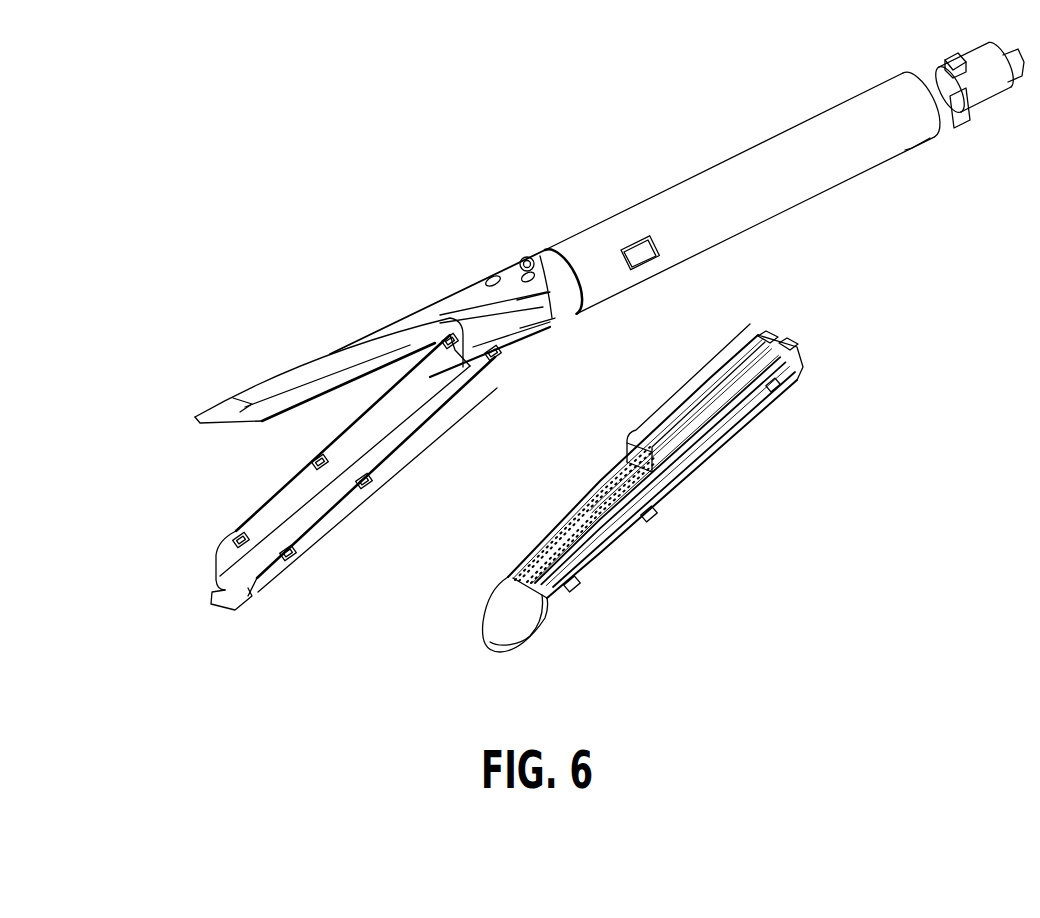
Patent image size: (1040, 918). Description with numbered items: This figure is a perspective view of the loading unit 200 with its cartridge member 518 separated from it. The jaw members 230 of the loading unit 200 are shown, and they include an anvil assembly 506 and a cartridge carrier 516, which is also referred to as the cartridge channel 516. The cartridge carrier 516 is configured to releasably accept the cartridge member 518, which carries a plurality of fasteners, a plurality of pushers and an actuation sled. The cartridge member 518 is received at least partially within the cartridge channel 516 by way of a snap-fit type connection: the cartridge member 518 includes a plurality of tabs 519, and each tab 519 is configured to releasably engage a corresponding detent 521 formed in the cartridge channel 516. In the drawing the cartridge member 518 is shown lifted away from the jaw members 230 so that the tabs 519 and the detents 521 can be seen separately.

The loading unit 200 is at (758, 130).
The jaw members 230 is at (292, 332).
The anvil assembly 506 is at (360, 338).
The cartridge carrier 516 is at (322, 519).
The cartridge member 518 is at (732, 476).
The tabs 519 is at (792, 385).
The detent 521 is at (316, 462).